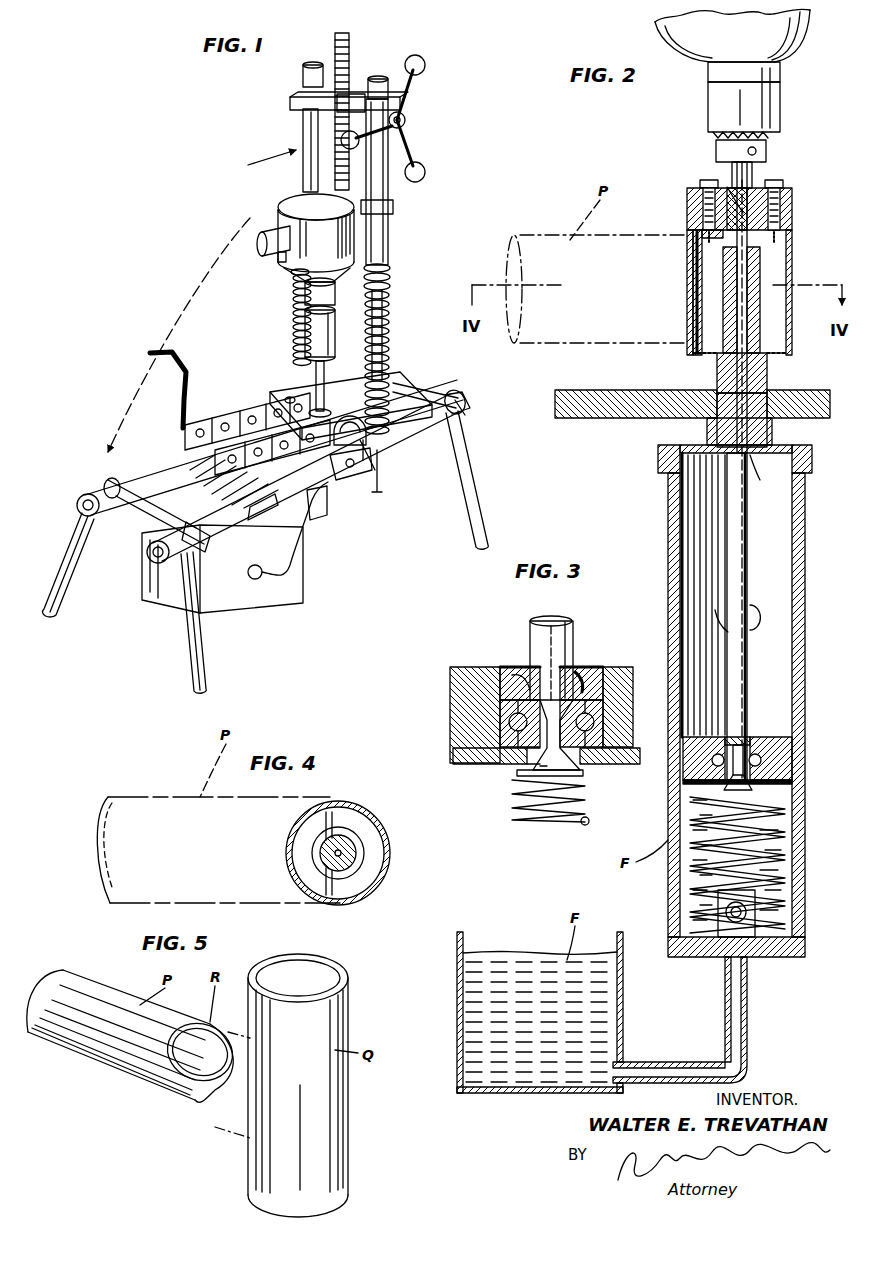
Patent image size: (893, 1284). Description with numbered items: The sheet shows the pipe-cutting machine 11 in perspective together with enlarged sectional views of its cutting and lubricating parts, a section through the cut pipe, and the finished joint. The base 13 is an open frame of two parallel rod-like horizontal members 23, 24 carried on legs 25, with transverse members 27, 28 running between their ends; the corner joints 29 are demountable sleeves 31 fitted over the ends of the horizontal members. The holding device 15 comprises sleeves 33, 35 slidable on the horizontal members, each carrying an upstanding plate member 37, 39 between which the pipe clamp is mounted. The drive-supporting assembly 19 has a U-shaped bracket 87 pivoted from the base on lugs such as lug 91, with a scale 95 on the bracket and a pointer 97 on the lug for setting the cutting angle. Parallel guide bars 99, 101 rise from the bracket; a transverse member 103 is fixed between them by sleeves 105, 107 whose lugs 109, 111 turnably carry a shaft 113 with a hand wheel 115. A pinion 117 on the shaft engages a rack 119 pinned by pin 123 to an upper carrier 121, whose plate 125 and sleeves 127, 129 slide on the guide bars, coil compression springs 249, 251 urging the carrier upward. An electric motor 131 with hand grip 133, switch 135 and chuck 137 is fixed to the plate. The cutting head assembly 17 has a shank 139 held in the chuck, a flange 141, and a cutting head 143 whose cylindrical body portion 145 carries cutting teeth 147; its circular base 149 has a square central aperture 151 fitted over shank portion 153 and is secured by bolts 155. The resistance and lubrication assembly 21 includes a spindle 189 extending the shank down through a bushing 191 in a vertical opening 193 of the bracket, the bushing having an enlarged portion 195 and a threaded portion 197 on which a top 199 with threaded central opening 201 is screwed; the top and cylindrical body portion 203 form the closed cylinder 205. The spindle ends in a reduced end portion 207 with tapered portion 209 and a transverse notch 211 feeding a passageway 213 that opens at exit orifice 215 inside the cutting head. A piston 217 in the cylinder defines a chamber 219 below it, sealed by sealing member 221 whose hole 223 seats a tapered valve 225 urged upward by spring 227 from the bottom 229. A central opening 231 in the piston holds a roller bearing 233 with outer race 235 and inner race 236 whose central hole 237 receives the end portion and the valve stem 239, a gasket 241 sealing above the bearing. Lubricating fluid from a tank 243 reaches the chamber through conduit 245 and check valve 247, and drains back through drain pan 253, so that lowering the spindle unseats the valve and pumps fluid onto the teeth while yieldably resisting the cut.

In FIG. 1, the machine 11 is at (182, 126).
In FIG. 1, the base 13 is at (58, 468).
In FIG. 1, the holding device 15 is at (192, 340).
In FIG. 1, the cutting head assembly 17 is at (305, 330).
In FIG. 2, the cutting head assembly 17 is at (808, 160).
In FIG. 1, the assembly 19 is at (430, 237).
In FIG. 2, the assembly 21 is at (580, 475).
In FIG. 1, the horizontal member 23 is at (408, 435).
In FIG. 1, the horizontal member 24 is at (165, 485).
In FIG. 1, the legs 25 is at (85, 595).
In FIG. 1, the transverse member 27 is at (160, 530).
In FIG. 1, the transverse member 28 is at (408, 387).
In FIG. 1, the joints 29 is at (468, 375).
In FIG. 1, the sleeves 31 is at (468, 393).
In FIG. 1, the sleeve 33 is at (328, 498).
In FIG. 1, the sleeve 35 is at (187, 440).
In FIG. 1, the plate member 37 is at (348, 481).
In FIG. 1, the plate member 39 is at (198, 420).
In FIG. 1, the U-shaped bracket 87 is at (300, 388).
In FIG. 2, the U-shaped bracket 87 is at (612, 418).
In FIG. 1, the lug 91 is at (378, 452).
In FIG. 1, the scale 95 is at (350, 414).
In FIG. 1, the pointer 97 is at (390, 470).
In FIG. 1, the guide bar 99 is at (390, 297).
In FIG. 1, the guide bar 101 is at (293, 296).
In FIG. 1, the transverse member 103 is at (378, 78).
In FIG. 1, the sleeve 105 is at (402, 112).
In FIG. 1, the sleeve 107 is at (303, 82).
In FIG. 1, the lug 109 is at (405, 120).
In FIG. 1, the lug 111 is at (336, 104).
In FIG. 1, the shaft 113 is at (320, 115).
In FIG. 1, the hand wheel 115 is at (425, 58).
In FIG. 1, the pinion 117 is at (305, 150).
In FIG. 1, the rack 119 is at (338, 45).
In FIG. 1, the upper carrier 121 is at (394, 212).
In FIG. 1, the pin 123 is at (310, 215).
In FIG. 1, the plate 125 is at (391, 275).
In FIG. 1, the sleeve 127 is at (390, 235).
In FIG. 1, the sleeve 129 is at (290, 200).
In FIG. 1, the electric motor 131 is at (336, 290).
In FIG. 2, the electric motor 131 is at (798, 28).
In FIG. 1, the hand grip 133 is at (255, 240).
In FIG. 1, the switch 135 is at (278, 258).
In FIG. 1, the chuck 137 is at (334, 360).
In FIG. 2, the chuck 137 is at (712, 118).
In FIG. 2, the shank 139 is at (732, 168).
In FIG. 2, the flange 141 is at (794, 198).
In FIG. 2, the cutting head 143 is at (795, 230).
In FIG. 2, the cylindrical body portion 145 is at (793, 262).
In FIG. 2, the cutting teeth 147 is at (786, 352).
In FIG. 2, the circular base 149 is at (687, 212).
In FIG. 2, the central aperture 151 is at (700, 242).
In FIG. 2, the portion 153 is at (738, 192).
In FIG. 2, the bolts 155 is at (780, 182).
In FIG. 2, the spindle 189 is at (748, 553).
In FIG. 2, the bushing 191 is at (736, 325).
In FIG. 2, the vertical opening 193 is at (718, 385).
In FIG. 2, the enlarged portion 195 is at (720, 366).
In FIG. 2, the threaded portion 197 is at (773, 433).
In FIG. 2, the top 199 is at (697, 446).
In FIG. 2, the threaded central opening 201 is at (765, 476).
In FIG. 2, the cylindrical body portion 203 is at (806, 526).
In FIG. 2, the cylinder 205 is at (667, 598).
In FIG. 3, the end portion 207 is at (596, 672).
In FIG. 3, the tapered portion 209 is at (518, 672).
In FIG. 3, the transverse notch 211 is at (607, 712).
In FIG. 2, the passageway 213 is at (750, 668).
In FIG. 3, the passageway 213 is at (548, 620).
In FIG. 2, the exit orifice 215 is at (760, 252).
In FIG. 2, the piston 217 is at (793, 735).
In FIG. 3, the piston 217 is at (458, 693).
In FIG. 2, the chamber 219 is at (790, 825).
In FIG. 2, the sealing member 221 is at (795, 782).
In FIG. 3, the sealing member 221 is at (463, 764).
In FIG. 2, the hole 223 is at (683, 800).
In FIG. 3, the hole 223 is at (547, 768).
In FIG. 3, the tapered valve 225 is at (548, 812).
In FIG. 2, the spring 227 is at (770, 878).
In FIG. 3, the spring 227 is at (585, 826).
In FIG. 2, the bottom 229 is at (775, 950).
In FIG. 2, the central opening 231 is at (752, 742).
In FIG. 3, the central opening 231 is at (498, 668).
In FIG. 3, the roller bearing 233 is at (492, 727).
In FIG. 3, the outer race 235 is at (612, 735).
In FIG. 3, the inner race 236 is at (517, 764).
In FIG. 3, the central hole 237 is at (585, 766).
In FIG. 3, the stem 239 is at (570, 776).
In FIG. 3, the gasket 241 is at (582, 672).
In FIG. 1, the tank 243 is at (240, 590).
In FIG. 2, the tank 243 is at (458, 990).
In FIG. 2, the conduit 245 is at (648, 1062).
In FIG. 2, the check valve 247 is at (728, 922).
In FIG. 1, the coil compression spring 249 is at (390, 336).
In FIG. 1, the coil compression spring 251 is at (292, 285).
In FIG. 1, the drain pan 253 is at (300, 525).